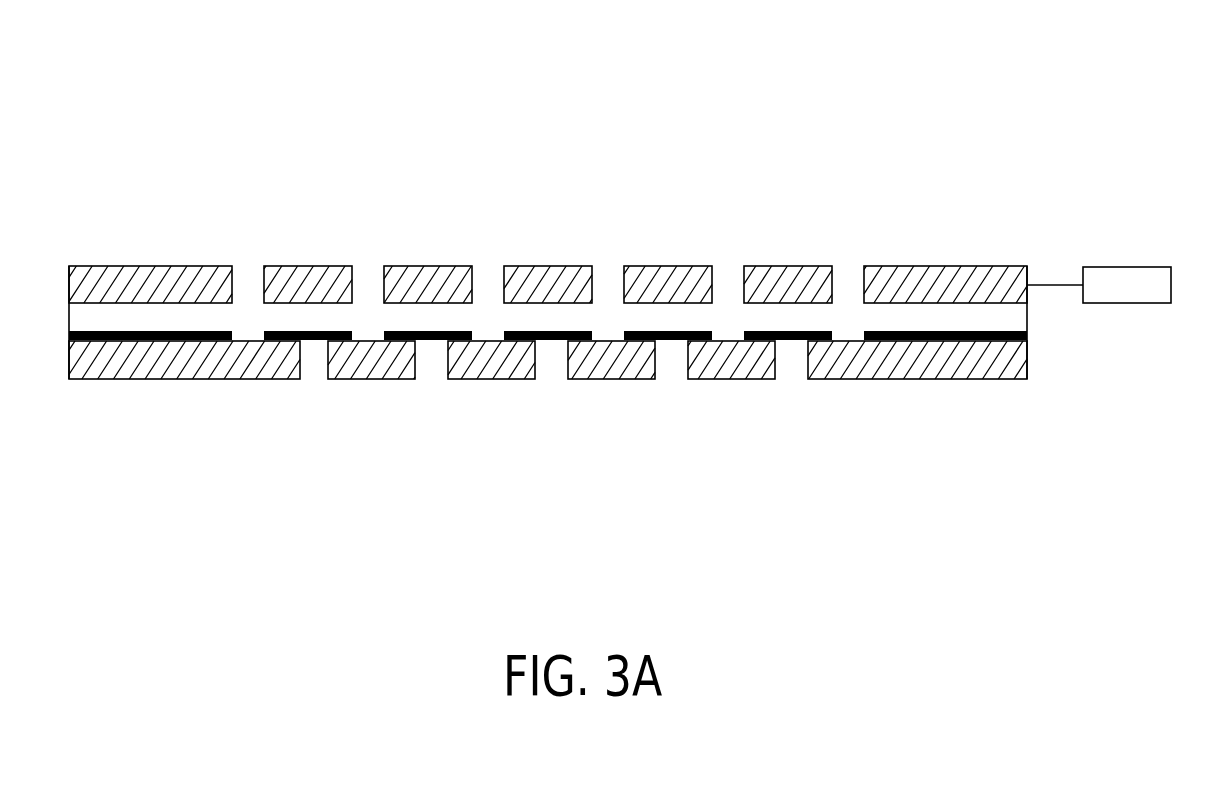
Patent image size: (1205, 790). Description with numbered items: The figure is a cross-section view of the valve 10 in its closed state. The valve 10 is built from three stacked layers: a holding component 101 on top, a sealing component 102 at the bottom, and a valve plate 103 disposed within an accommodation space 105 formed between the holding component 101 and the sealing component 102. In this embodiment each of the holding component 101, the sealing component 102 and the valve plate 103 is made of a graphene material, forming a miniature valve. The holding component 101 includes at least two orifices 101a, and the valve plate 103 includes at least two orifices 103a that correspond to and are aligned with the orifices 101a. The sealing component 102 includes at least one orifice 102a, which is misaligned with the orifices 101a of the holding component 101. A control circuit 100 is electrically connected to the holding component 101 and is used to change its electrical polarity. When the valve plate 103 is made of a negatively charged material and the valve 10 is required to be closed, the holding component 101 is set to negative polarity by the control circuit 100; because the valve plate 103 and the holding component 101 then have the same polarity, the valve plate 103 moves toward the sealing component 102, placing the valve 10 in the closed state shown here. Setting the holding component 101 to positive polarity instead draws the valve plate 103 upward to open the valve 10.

The valve 10 is at (1005, 80).
The control circuit 100 is at (1125, 266).
The holding component 101 is at (918, 277).
The orifices of the holding component 101a is at (740, 247).
The sealing component 102 is at (855, 362).
The orifice of the sealing component 102a is at (570, 395).
The valve plate 103 is at (1010, 340).
The orifices of the valve plate 103a is at (506, 312).
The accommodation space 105 is at (913, 313).